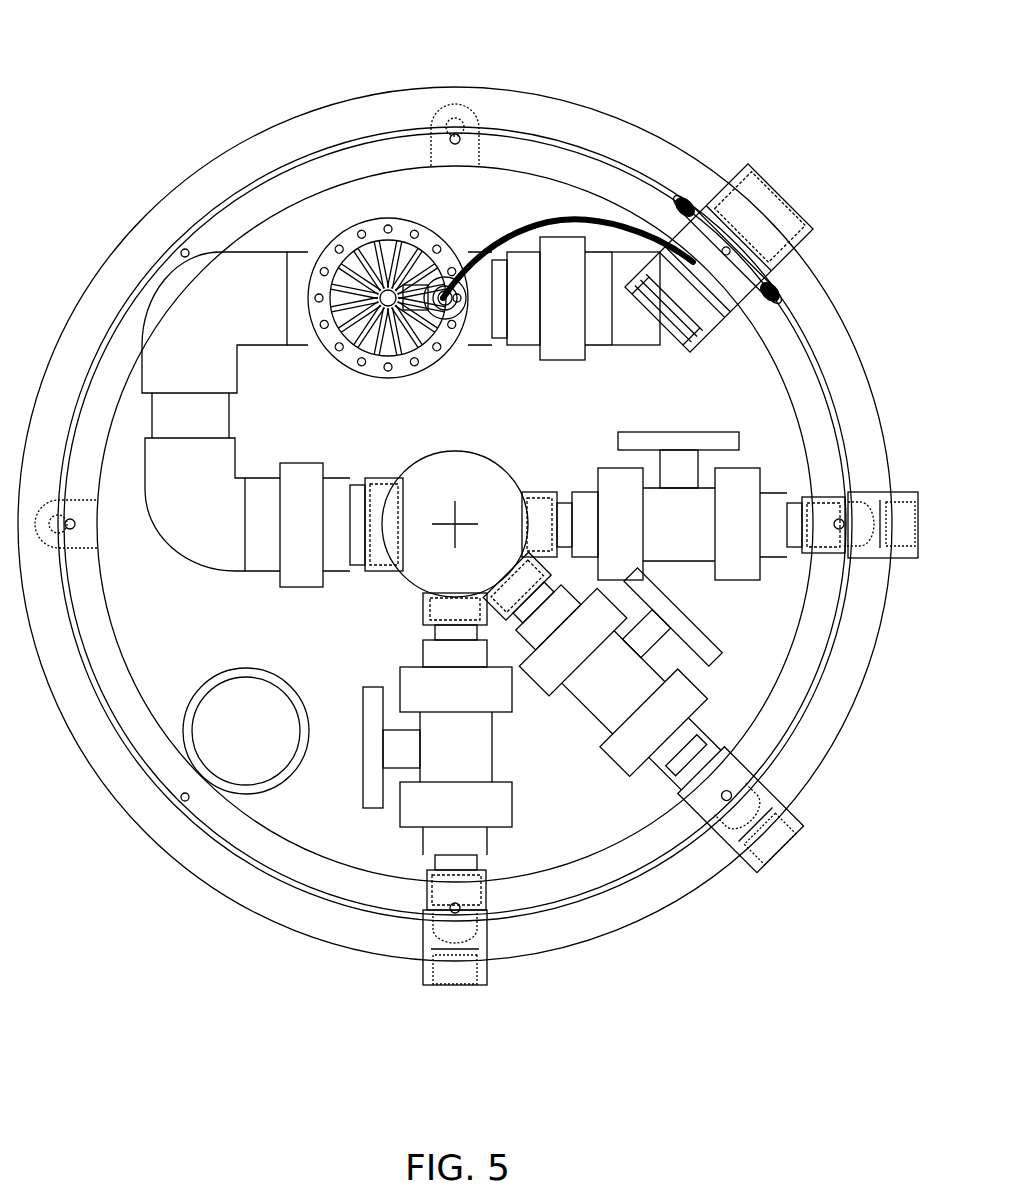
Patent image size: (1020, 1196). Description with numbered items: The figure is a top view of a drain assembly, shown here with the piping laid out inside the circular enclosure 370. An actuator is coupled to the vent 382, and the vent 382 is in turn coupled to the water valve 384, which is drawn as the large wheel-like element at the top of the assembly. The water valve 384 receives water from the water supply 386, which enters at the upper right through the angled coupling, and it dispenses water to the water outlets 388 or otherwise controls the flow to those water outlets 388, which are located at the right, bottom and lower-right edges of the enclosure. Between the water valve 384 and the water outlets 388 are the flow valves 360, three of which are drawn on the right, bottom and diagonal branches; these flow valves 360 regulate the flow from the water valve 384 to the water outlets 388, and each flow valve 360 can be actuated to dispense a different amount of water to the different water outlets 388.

The flow valve 360 is at (678, 562).
The vault housing ring 370 is at (385, 115).
The vent 382 is at (688, 313).
The water valve 384 is at (362, 222).
The water supply 386 is at (817, 230).
The water outlet 388 is at (907, 558).